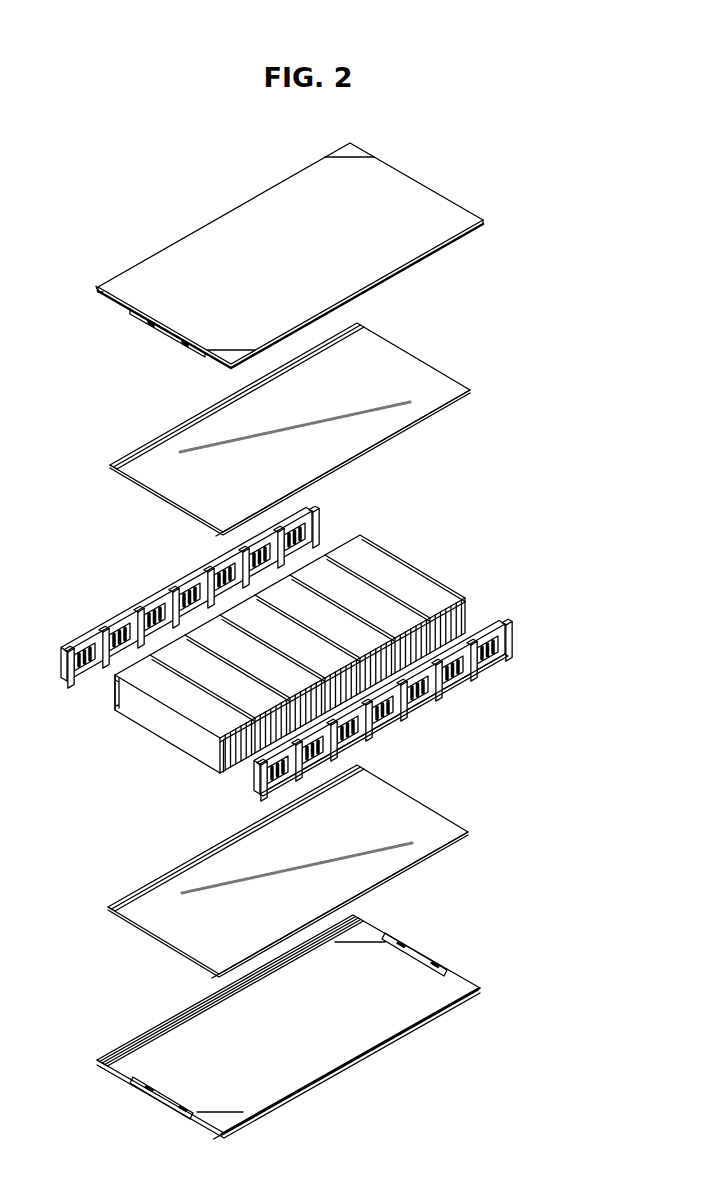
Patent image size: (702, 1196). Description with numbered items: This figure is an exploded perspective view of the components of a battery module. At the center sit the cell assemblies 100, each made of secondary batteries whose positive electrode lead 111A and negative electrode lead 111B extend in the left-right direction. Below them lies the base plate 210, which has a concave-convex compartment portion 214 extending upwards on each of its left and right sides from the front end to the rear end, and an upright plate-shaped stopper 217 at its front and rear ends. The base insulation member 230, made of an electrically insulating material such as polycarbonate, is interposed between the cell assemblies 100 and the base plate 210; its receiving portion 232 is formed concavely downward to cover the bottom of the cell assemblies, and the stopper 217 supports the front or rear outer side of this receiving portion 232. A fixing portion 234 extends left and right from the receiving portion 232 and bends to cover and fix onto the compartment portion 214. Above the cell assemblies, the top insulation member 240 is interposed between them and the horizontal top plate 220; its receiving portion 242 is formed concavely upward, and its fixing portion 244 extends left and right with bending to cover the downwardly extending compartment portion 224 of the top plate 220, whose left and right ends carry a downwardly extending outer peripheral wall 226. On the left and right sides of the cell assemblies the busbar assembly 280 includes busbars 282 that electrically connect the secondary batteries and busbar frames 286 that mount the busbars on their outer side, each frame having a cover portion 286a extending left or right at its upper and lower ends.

The cell assembly 100 is at (257, 656).
The positive electrode lead 111A is at (117, 686).
The negative electrode lead 111B is at (216, 753).
The base plate 210 is at (299, 1025).
The compartment portion 214 is at (125, 1048).
The stopper 217 is at (419, 950).
The top plate 220 is at (290, 253).
The compartment portion 224 is at (110, 298).
The outer peripheral wall 226 is at (98, 292).
The base insulation member 230 is at (286, 866).
The receiving portion 232 is at (187, 885).
The fixing portion 234 is at (132, 896).
The top insulation member 240 is at (293, 427).
The receiving portion 242 is at (197, 440).
The fixing portion 244 is at (141, 450).
The busbar assembly 280 is at (316, 653).
The busbar 282 is at (514, 661).
The busbar frame 286 is at (513, 623).
The cover portion 286a is at (504, 670).